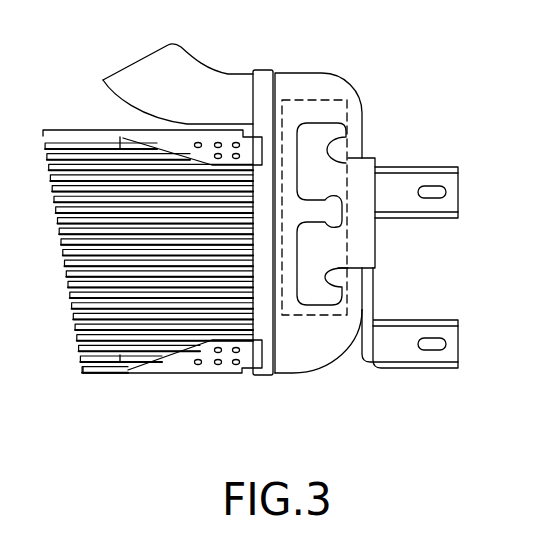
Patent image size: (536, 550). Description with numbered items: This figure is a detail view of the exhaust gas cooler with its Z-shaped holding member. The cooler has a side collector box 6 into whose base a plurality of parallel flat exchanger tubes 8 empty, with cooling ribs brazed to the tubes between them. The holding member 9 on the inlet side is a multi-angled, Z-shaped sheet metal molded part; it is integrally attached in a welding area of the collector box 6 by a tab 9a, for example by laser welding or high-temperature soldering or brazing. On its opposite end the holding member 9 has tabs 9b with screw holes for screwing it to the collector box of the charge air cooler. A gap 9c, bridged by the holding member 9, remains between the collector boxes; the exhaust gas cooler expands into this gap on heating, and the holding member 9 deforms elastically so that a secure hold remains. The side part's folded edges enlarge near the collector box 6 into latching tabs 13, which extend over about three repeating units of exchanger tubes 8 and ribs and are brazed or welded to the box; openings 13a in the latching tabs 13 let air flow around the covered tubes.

The collector box 6 is at (292, 85).
The flat exchanger tubes 8 is at (102, 308).
The holding member 9 is at (325, 173).
The tab 9a is at (328, 100).
The tabs 9b is at (420, 362).
The gap 9c is at (366, 312).
The latching tabs 13 is at (202, 352).
The openings 13a is at (217, 360).